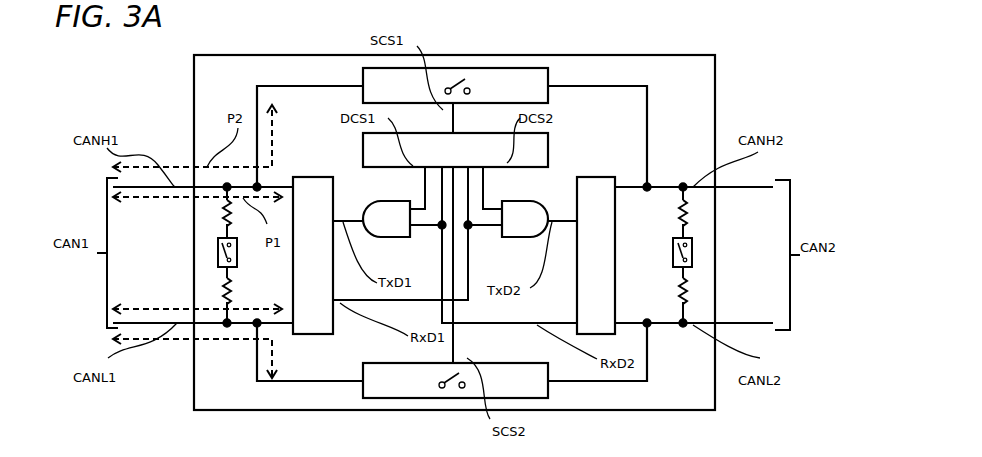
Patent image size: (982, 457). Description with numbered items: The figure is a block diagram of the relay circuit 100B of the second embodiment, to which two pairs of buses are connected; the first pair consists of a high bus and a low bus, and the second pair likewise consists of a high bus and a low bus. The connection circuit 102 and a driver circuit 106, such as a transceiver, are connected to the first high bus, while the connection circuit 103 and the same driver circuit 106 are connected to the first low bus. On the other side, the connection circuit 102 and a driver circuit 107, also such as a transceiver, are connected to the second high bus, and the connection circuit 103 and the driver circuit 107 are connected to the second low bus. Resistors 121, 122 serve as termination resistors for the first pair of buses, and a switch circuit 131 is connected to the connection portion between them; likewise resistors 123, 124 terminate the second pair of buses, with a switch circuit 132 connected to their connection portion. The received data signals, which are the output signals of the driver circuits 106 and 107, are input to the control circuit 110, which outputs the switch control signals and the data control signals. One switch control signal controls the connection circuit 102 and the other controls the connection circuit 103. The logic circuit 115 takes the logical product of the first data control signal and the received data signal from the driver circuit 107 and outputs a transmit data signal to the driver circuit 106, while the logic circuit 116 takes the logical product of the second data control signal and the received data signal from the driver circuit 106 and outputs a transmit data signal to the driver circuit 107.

The relay circuit 100B is at (660, 55).
The connection circuit 102 is at (520, 67).
The connection circuit 103 is at (570, 411).
The driver circuit 106 is at (293, 336).
The driver circuit 107 is at (620, 327).
The control circuit 110 is at (548, 147).
The logic circuit 115 is at (383, 200).
The logic circuit 116 is at (530, 200).
The resistor 121 is at (218, 217).
The resistor 122 is at (218, 287).
The resistor 123 is at (693, 222).
The resistor 124 is at (693, 287).
The switch circuit 131 is at (218, 252).
The switch circuit 132 is at (693, 253).